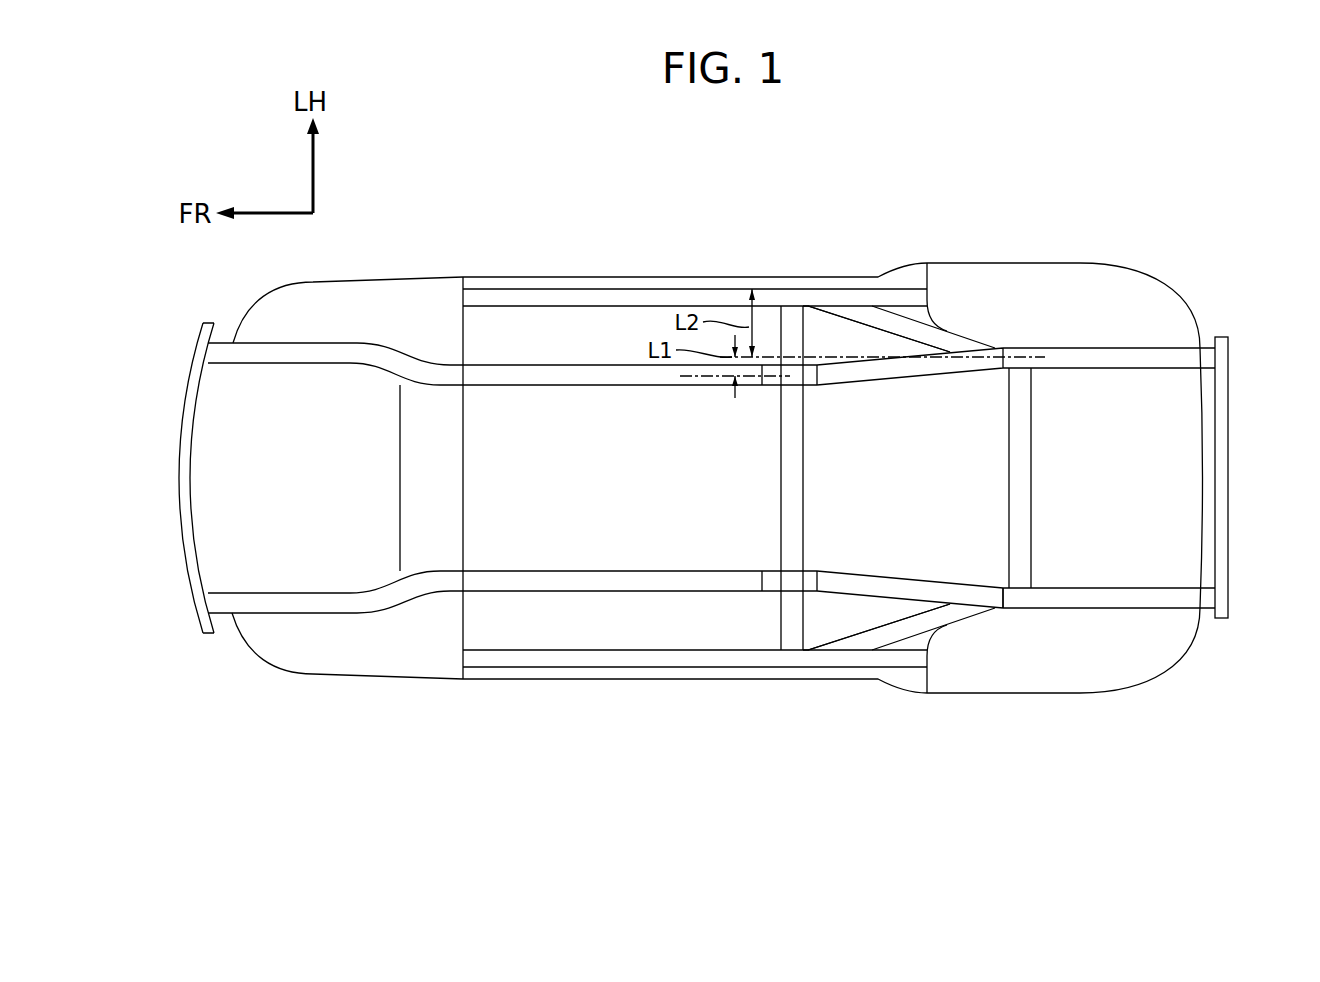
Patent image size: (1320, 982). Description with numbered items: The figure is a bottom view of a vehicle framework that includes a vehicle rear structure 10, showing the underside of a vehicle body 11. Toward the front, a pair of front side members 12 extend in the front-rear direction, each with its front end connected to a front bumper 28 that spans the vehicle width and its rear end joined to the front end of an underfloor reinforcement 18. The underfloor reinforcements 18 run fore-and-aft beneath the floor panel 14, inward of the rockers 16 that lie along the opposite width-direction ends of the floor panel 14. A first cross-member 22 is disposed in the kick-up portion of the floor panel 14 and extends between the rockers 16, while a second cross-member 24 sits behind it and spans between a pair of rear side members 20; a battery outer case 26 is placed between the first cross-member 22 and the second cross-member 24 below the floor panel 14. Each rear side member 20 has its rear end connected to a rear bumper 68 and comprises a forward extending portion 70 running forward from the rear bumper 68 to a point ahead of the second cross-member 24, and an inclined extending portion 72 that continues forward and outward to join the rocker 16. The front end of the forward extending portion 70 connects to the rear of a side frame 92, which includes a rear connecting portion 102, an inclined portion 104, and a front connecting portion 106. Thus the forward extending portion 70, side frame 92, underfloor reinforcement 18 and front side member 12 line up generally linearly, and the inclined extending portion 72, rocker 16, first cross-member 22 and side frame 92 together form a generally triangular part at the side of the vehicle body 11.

The vehicle rear structure 10 is at (882, 228).
The vehicle body 11 is at (427, 263).
The front side member 12 is at (333, 352).
The floor panel 14 is at (553, 332).
The rocker 16 is at (685, 283).
The underfloor reinforcement 18 is at (656, 385).
The rear side member 20 is at (1078, 338).
The first cross-member 22 is at (805, 478).
The second cross-member 24 is at (1035, 478).
The battery outer case 26 is at (952, 567).
The front bumper 28 is at (185, 483).
The rear bumper 68 is at (1222, 477).
The forward extending portion 70 is at (1016, 474).
The inclined extending portion 72 is at (952, 343).
The side frame 92 is at (863, 346).
The rear connecting portion 102 is at (977, 365).
The inclined portion 104 is at (877, 370).
The front connecting portion 106 is at (768, 385).